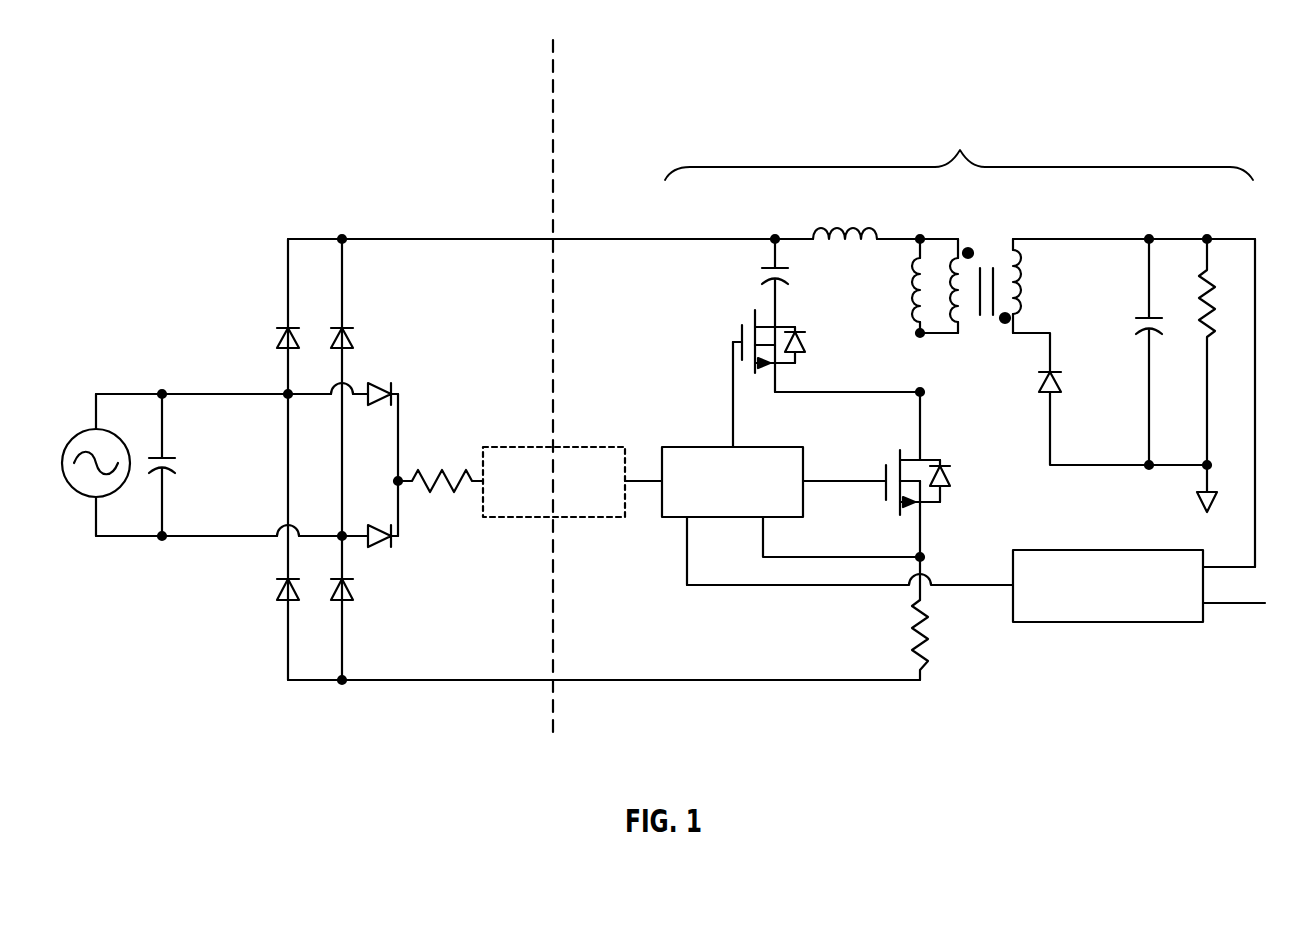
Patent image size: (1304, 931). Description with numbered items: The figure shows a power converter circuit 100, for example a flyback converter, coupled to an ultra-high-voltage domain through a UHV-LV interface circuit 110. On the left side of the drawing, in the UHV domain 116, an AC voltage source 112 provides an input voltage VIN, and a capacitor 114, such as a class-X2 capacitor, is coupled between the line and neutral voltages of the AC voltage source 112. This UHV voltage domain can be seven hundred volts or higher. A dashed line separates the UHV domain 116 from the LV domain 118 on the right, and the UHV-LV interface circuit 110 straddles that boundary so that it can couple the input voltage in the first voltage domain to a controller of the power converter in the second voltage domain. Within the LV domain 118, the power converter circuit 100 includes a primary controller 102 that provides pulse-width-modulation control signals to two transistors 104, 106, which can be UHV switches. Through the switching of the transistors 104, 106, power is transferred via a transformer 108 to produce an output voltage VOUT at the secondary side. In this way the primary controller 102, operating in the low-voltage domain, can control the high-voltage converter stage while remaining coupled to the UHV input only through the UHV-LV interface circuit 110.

The power converter circuit 100 is at (965, 402).
The primary controller 102 is at (697, 447).
The transistor 104 is at (743, 320).
The transistor 106 is at (910, 453).
The transformer 108 is at (985, 250).
The UHV-LV interface circuit 110 is at (502, 447).
The AC voltage source 112 is at (75, 432).
The capacitor 114 is at (170, 460).
The UHV domain 116 is at (432, 85).
The LV domain 118 is at (675, 85).